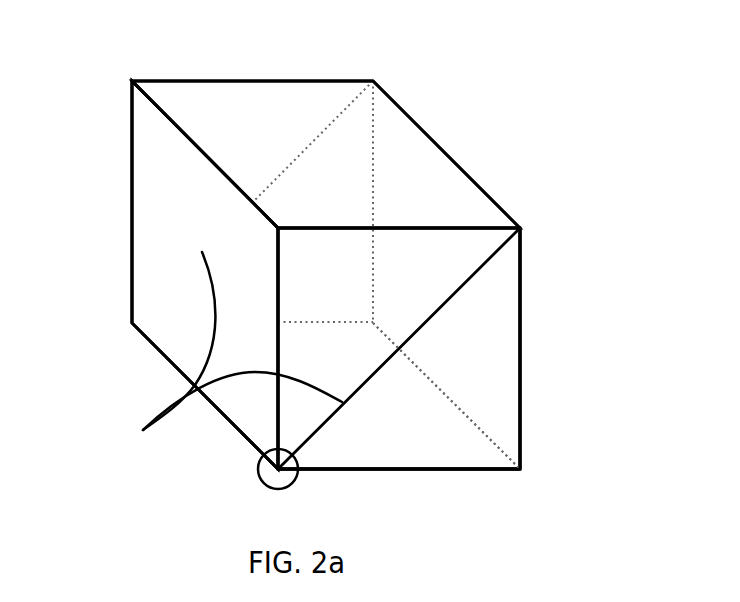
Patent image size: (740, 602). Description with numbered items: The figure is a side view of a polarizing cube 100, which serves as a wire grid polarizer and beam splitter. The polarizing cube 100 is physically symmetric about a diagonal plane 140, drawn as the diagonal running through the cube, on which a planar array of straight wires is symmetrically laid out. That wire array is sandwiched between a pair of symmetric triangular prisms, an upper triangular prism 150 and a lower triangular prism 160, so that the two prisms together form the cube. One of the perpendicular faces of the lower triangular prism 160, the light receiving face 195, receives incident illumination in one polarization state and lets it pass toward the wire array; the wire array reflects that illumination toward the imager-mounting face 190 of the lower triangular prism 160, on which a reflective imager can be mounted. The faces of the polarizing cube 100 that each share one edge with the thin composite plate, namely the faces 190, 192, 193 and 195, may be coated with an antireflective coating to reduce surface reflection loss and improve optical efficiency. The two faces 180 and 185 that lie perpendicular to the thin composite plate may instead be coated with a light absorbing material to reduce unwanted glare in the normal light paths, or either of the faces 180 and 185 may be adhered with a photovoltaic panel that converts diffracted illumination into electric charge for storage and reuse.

The polarizing cube 100 is at (525, 176).
The diagonal plane 140 is at (195, 586).
The upper triangular prism 150 is at (445, 258).
The lower triangular prism 160 is at (488, 327).
The face perpendicular to the thin composite plate 180 is at (158, 170).
The face perpendicular to the thin composite plate 185 is at (379, 457).
The imager-mounting face 190 is at (440, 440).
The face of the polarizing cube 192 is at (148, 262).
The face of the polarizing cube 193 is at (283, 92).
The light receiving face 195 is at (494, 383).